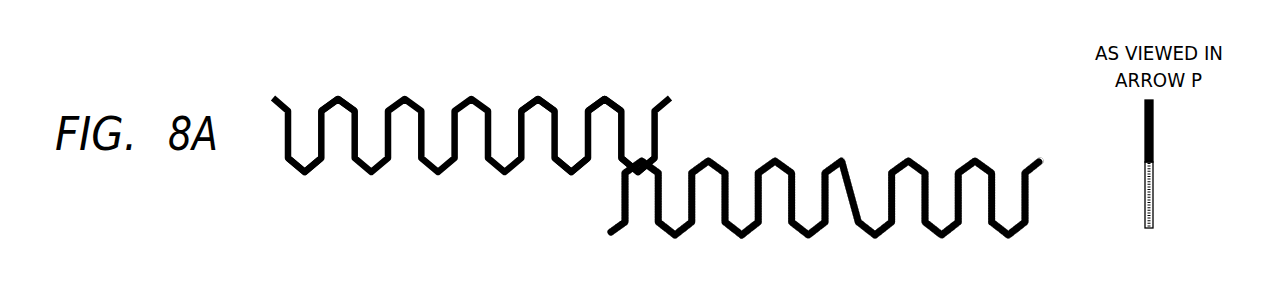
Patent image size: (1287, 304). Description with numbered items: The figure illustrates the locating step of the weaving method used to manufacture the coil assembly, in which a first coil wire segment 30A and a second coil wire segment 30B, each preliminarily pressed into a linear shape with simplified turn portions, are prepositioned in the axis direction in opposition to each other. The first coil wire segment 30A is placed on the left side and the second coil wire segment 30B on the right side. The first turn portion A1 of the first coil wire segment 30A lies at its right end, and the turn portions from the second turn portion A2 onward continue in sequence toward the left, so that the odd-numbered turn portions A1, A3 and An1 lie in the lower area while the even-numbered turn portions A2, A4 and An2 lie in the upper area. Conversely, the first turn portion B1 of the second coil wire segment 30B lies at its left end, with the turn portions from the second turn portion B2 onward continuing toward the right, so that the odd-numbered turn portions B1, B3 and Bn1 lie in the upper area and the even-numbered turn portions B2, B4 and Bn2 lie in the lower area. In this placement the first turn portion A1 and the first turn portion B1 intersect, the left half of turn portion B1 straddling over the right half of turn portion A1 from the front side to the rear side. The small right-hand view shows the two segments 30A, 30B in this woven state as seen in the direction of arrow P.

The first coil wire segment 30A is at (425, 178).
The second coil wire segment 30B is at (853, 157).
The odd-numbered turn portion An1 is at (302, 174).
The even-numbered turn portion An2 is at (349, 97).
The first turn portion A1 is at (644, 177).
The second turn portion A2 is at (590, 97).
The odd-numbered turn portion A3 is at (565, 177).
The even-numbered turn portion A4 is at (524, 98).
The first turn portion B1 is at (634, 152).
The second turn portion B2 is at (679, 239).
The odd-numbered turn portion B3 is at (718, 157).
The even-numbered turn portion B4 is at (749, 239).
The odd-numbered turn portion Bn1 is at (906, 159).
The even-numbered turn portion Bn2 is at (998, 234).
The arrow P is at (1033, 148).